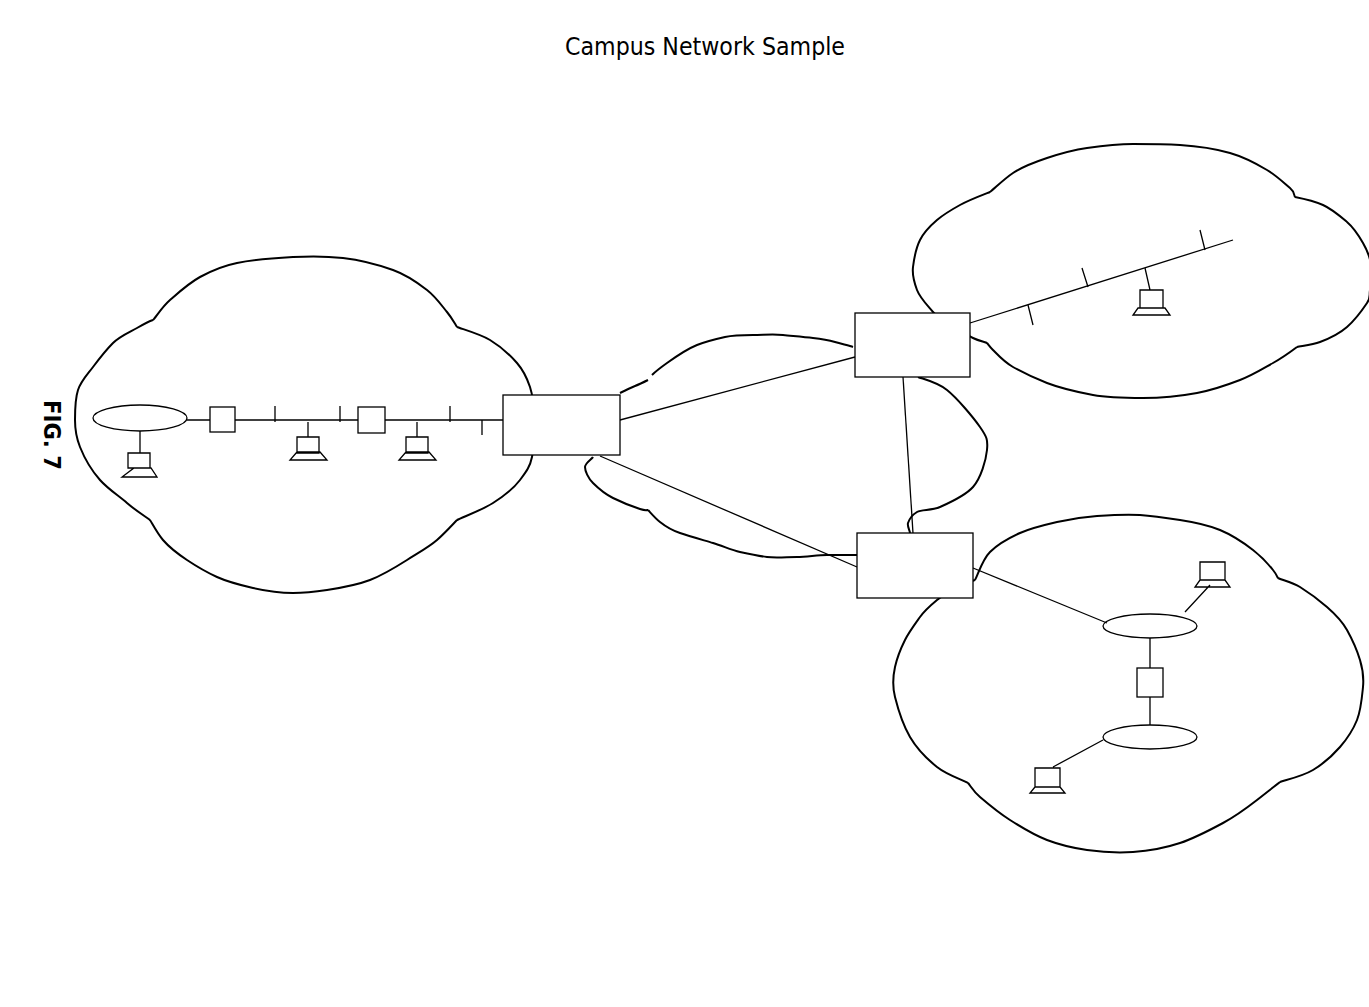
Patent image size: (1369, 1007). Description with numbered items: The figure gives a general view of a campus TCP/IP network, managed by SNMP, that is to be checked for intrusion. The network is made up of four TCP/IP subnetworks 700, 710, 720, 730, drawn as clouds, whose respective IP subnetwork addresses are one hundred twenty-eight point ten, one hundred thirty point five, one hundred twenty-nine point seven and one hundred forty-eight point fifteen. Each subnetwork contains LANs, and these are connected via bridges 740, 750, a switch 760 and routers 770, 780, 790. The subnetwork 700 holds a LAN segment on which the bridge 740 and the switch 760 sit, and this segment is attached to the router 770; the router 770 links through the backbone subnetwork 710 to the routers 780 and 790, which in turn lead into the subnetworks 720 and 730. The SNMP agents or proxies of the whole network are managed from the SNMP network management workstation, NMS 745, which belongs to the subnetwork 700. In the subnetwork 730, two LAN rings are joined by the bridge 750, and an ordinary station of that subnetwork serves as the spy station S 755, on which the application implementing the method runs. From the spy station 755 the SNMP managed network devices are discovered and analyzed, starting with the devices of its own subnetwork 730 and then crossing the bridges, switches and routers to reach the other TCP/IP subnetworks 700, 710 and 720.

The TCP/IP subnetwork 700 is at (440, 293).
The TCP/IP subnetwork 710 is at (762, 330).
The TCP/IP subnetwork 720 is at (940, 218).
The TCP/IP subnetwork 730 is at (1255, 543).
The bridge 740 is at (226, 407).
The SNMP network management workstation (NMS) 745 is at (157, 460).
The bridge 750 is at (1165, 680).
The spy station (S) 755 is at (1062, 780).
The switch 760 is at (374, 407).
The router 770 is at (572, 395).
The router 780 is at (892, 312).
The router 790 is at (958, 533).